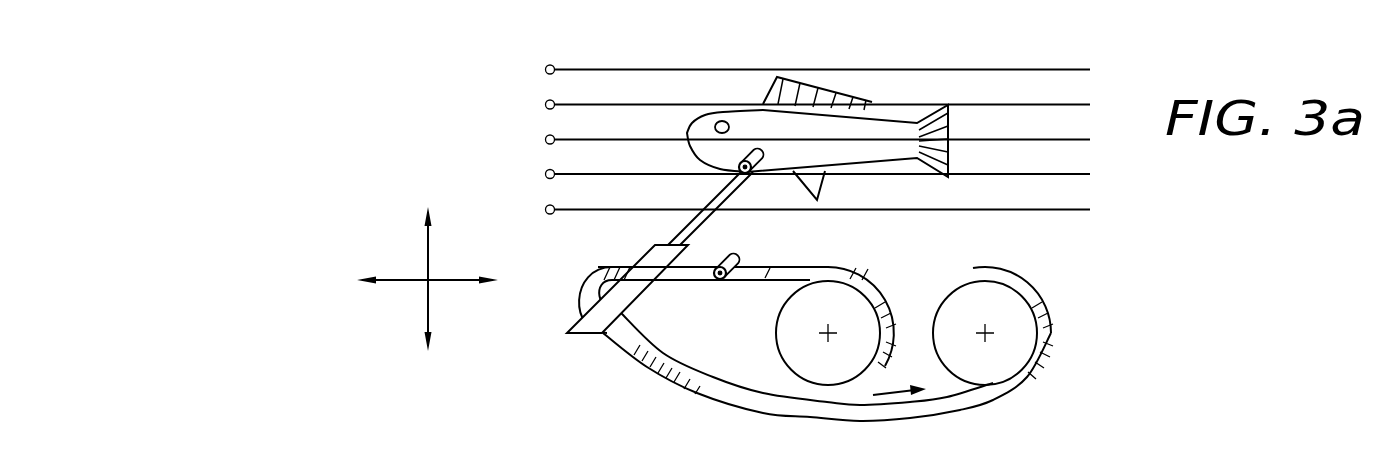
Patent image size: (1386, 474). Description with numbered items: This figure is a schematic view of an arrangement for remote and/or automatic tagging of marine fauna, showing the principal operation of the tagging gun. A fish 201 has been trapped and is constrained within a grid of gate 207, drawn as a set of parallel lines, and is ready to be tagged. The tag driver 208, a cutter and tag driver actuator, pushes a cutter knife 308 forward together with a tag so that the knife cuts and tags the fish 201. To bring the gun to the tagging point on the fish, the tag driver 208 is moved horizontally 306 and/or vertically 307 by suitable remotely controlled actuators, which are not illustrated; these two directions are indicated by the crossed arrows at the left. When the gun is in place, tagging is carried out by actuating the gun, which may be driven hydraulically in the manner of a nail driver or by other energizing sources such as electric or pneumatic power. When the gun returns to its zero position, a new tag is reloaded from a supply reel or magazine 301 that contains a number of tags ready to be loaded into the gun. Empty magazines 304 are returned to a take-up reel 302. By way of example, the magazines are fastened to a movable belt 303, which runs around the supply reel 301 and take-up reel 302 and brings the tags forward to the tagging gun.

The fish 201 is at (887, 112).
The grid of gate 207 is at (988, 69).
The tag driver 208 is at (647, 248).
The supply reel or magazine 301 is at (853, 308).
The take-up reel 302 is at (1020, 323).
The movable belt 303 is at (782, 407).
The empty magazines 304 is at (733, 262).
The horizontal movement 306 is at (455, 279).
The vertical movement 307 is at (427, 266).
The cutter knife 308 is at (752, 152).